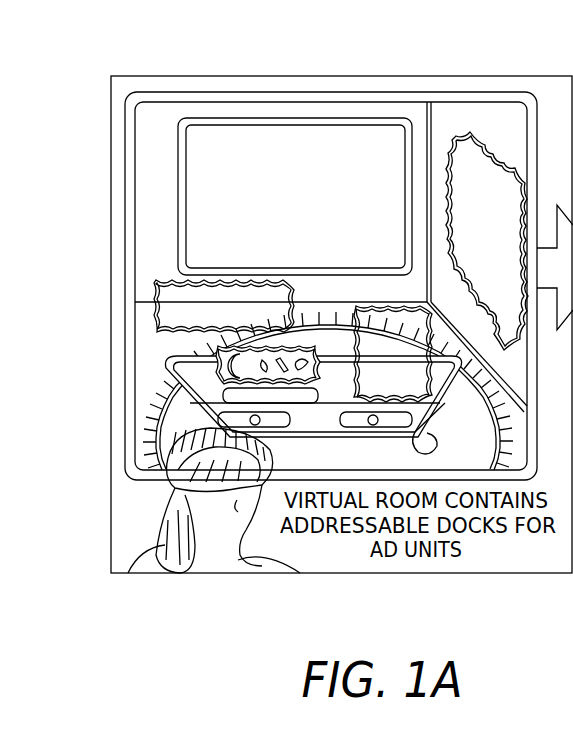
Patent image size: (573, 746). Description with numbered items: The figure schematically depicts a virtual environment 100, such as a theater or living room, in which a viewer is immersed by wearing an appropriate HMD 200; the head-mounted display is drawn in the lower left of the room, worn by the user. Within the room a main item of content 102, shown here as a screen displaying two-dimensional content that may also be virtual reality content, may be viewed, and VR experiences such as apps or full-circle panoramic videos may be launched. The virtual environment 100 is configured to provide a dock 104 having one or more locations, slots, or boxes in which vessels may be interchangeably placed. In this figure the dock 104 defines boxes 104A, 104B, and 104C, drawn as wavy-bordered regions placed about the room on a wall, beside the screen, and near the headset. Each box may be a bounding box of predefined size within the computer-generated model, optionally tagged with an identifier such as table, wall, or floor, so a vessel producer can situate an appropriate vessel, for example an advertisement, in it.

The virtual environment 100 is at (414, 110).
The main item of content 102 is at (268, 118).
The dock 104 is at (336, 296).
The box 104A is at (162, 321).
The box 104B is at (467, 241).
The box 104C is at (415, 385).
The HMD 200 is at (273, 447).